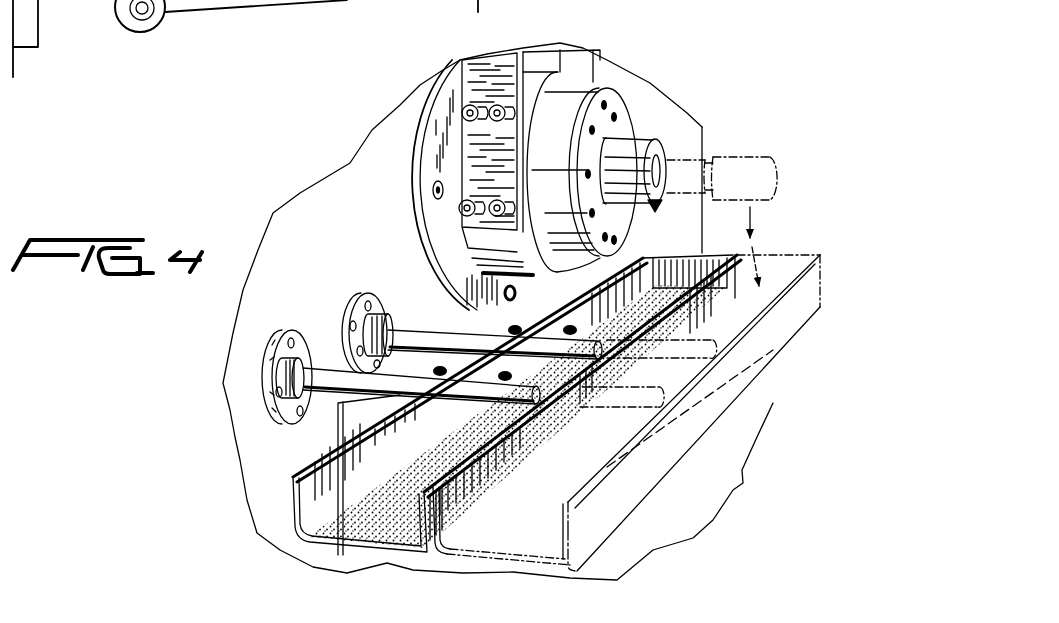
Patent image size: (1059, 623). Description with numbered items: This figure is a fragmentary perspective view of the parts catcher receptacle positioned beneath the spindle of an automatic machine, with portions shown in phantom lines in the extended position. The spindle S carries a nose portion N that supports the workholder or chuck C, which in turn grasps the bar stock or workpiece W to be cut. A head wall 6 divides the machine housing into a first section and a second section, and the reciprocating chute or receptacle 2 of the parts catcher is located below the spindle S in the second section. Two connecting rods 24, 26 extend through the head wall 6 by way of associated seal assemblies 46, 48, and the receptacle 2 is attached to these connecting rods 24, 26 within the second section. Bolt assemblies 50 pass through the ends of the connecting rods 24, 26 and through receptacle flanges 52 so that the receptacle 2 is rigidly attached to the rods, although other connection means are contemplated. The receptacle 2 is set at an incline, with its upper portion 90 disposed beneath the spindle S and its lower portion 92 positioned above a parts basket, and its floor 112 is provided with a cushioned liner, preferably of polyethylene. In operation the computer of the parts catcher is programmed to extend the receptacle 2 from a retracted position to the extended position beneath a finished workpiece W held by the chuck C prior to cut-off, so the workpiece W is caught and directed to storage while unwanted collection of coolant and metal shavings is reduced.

The receptacle 2 is at (681, 473).
The head wall 6 is at (370, 200).
The connecting rod 24 is at (330, 402).
The connecting rod 26 is at (458, 331).
The seal assembly 46 is at (262, 350).
The seal assembly 48 is at (353, 310).
The bolt assemblies 50 is at (633, 264).
The receptacle flanges 52 is at (548, 322).
The upper portion 90 is at (692, 258).
The lower portion 92 is at (290, 478).
The floor 112 is at (357, 512).
The spindle S is at (563, 44).
The nose portion N is at (565, 117).
The chuck C is at (630, 152).
The workpiece W is at (755, 155).